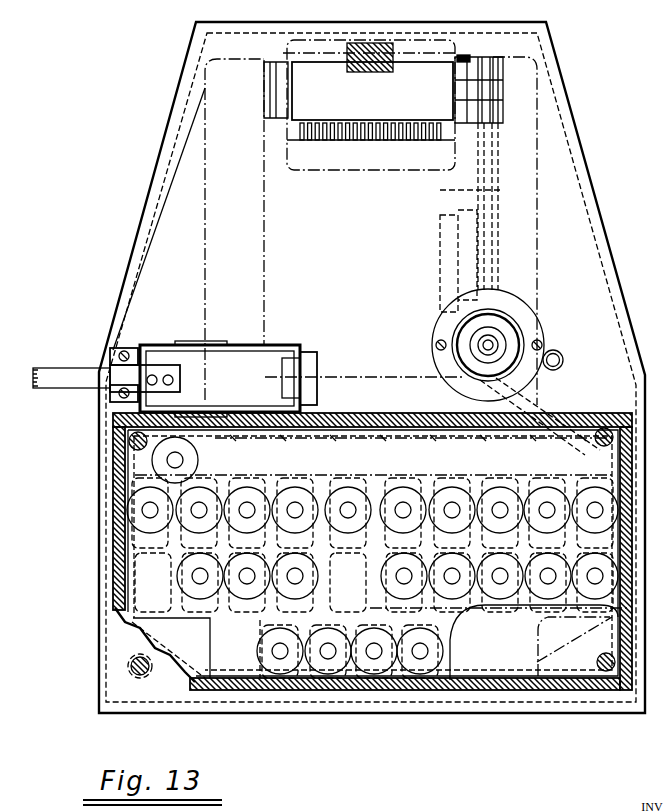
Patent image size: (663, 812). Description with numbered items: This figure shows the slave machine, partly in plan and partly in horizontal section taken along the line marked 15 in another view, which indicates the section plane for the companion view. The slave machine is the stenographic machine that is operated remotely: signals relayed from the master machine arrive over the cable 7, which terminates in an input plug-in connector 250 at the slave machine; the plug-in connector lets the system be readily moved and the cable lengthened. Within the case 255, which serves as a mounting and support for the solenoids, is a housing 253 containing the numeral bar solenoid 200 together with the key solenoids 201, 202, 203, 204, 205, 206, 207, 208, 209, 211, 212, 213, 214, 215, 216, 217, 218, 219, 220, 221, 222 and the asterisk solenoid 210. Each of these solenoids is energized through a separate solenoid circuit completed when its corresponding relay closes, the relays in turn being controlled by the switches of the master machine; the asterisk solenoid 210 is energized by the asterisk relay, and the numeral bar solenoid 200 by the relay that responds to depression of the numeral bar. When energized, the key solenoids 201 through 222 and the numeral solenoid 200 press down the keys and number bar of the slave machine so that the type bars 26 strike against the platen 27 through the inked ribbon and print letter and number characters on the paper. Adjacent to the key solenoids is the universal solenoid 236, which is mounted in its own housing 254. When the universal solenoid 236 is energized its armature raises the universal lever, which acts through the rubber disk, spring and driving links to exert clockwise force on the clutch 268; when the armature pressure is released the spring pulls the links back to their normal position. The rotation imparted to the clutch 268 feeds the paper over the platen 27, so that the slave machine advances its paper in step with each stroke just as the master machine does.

The cable 7 is at (69, 378).
The section line 15— 15 is at (373, 48).
The type bars 26 is at (408, 144).
The platen 27 is at (293, 107).
The numeral bar solenoid 200 is at (162, 465).
The key solenoid 201 is at (142, 515).
The key solenoid 202 is at (199, 513).
The key solenoid 203 is at (200, 582).
The key solenoid 204 is at (247, 513).
The key solenoid 205 is at (247, 582).
The key solenoid 206 is at (295, 513).
The key solenoid 207 is at (295, 582).
The key solenoid 208 is at (280, 651).
The key solenoid 209 is at (328, 651).
The asterisk solenoid 210 is at (348, 513).
The key solenoid 211 is at (374, 651).
The key solenoid 212 is at (420, 651).
The key solenoid 213 is at (403, 513).
The key solenoid 214 is at (404, 582).
The key solenoid 215 is at (452, 513).
The key solenoid 216 is at (452, 582).
The key solenoid 217 is at (490, 440).
The key solenoid 218 is at (500, 582).
The key solenoid 219 is at (547, 513).
The key solenoid 220 is at (548, 582).
The key solenoid 221 is at (595, 513).
The key solenoid 222 is at (595, 582).
The universal solenoid 236 is at (510, 343).
The input plug-in connector 250 is at (243, 370).
The housing 253 is at (115, 562).
The housing 254 is at (517, 315).
The case 255 is at (118, 661).
The clutch 268 is at (492, 97).